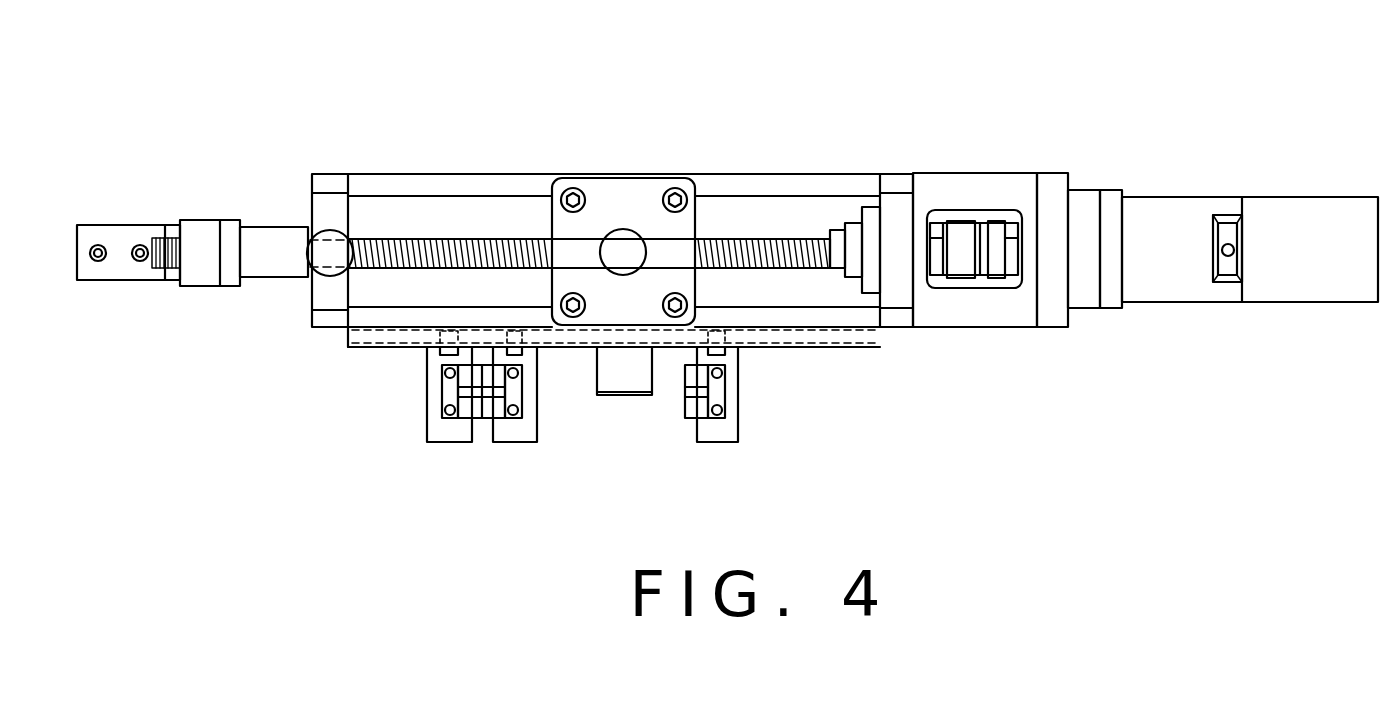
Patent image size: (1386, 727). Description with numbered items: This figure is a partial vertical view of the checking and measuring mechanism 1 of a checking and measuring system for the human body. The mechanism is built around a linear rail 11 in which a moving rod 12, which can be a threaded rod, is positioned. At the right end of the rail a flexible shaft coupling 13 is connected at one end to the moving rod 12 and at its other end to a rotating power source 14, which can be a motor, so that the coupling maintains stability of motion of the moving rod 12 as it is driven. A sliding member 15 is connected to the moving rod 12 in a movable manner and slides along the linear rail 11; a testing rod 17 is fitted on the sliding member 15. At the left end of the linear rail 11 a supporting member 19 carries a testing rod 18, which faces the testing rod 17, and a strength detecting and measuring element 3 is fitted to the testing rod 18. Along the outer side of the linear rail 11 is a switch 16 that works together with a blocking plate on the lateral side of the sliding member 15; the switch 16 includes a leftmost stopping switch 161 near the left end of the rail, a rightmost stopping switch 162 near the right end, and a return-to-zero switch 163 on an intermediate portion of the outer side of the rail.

The checking and measuring mechanism 1 is at (1093, 327).
The strength detecting and measuring element 3 is at (205, 227).
The linear rail 11 is at (800, 293).
The moving rod 12 is at (783, 237).
The flexible shaft coupling 13 is at (962, 230).
The rotating power source 14 is at (1160, 212).
The sliding member 15 is at (687, 223).
The switch 16 is at (536, 431).
The testing rod 17 is at (632, 237).
The testing rod 18 is at (332, 232).
The supporting member 19 is at (118, 237).
The leftmost stopping switch 161 is at (453, 432).
The rightmost stopping switch 162 is at (715, 432).
The return-to-zero switch 163 is at (520, 432).